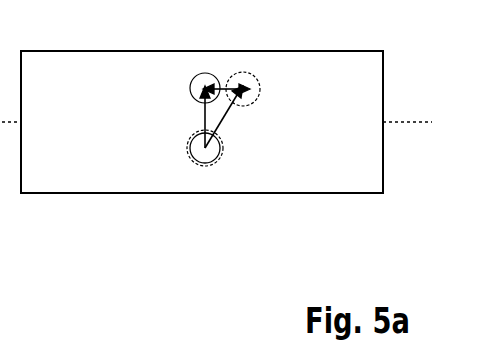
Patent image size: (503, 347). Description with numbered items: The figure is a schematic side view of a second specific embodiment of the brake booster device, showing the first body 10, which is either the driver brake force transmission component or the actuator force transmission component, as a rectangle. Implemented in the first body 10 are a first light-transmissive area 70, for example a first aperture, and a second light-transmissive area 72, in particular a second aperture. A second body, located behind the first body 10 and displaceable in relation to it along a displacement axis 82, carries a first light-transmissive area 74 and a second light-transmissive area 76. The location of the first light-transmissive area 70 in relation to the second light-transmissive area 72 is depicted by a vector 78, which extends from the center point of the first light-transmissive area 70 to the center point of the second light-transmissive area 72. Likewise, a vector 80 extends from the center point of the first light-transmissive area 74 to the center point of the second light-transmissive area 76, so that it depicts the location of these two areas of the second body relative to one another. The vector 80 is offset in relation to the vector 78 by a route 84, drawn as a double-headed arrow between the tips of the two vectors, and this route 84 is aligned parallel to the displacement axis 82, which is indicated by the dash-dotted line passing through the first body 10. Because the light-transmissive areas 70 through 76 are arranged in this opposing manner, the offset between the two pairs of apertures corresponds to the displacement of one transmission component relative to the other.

The first body 10 is at (328, 178).
The first light-transmissive area 70 is at (208, 167).
The second light-transmissive area 72 is at (205, 73).
The first light-transmissive area 74 is at (224, 149).
The second light-transmissive area 76 is at (261, 85).
The vector 78 is at (205, 112).
The vector 80 is at (222, 113).
The displacement axis 82 is at (417, 122).
The route 84 is at (222, 88).